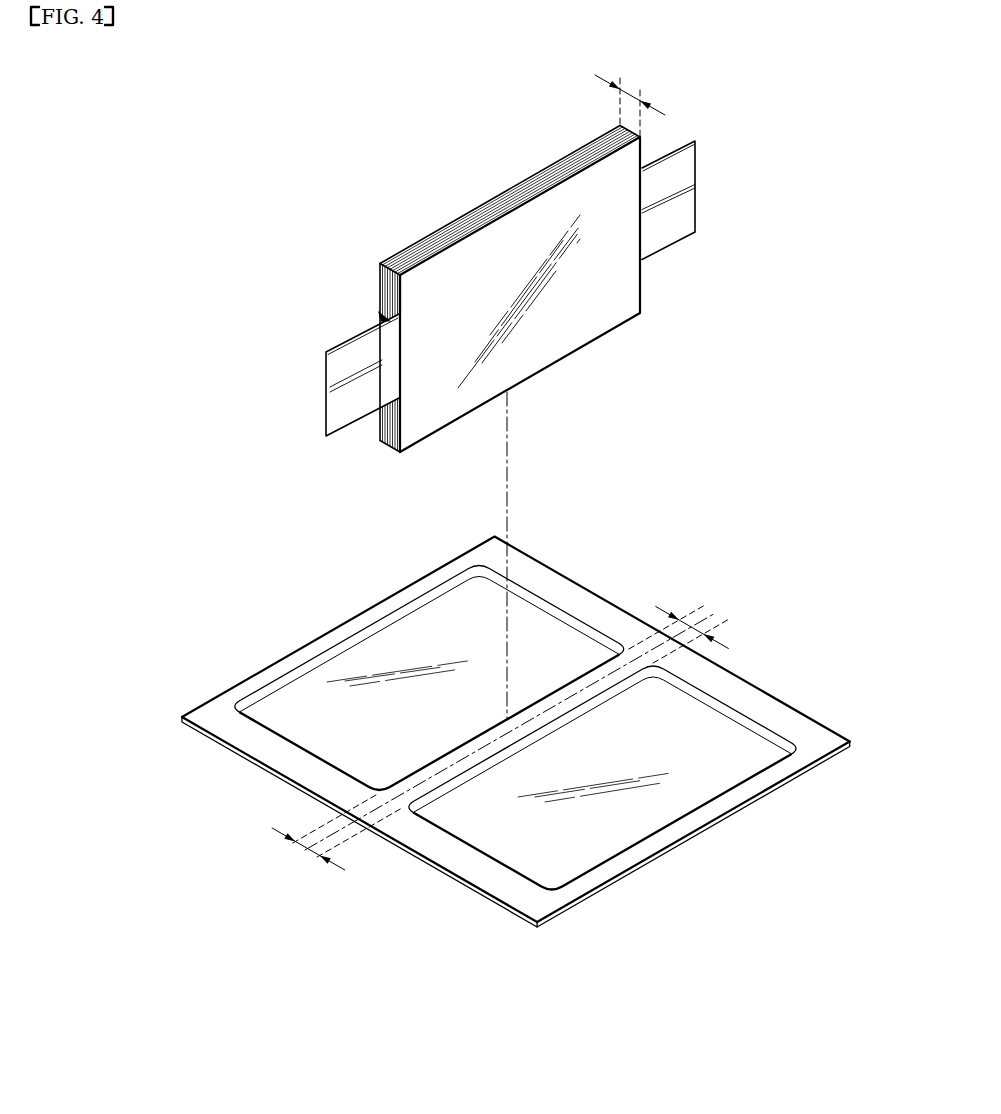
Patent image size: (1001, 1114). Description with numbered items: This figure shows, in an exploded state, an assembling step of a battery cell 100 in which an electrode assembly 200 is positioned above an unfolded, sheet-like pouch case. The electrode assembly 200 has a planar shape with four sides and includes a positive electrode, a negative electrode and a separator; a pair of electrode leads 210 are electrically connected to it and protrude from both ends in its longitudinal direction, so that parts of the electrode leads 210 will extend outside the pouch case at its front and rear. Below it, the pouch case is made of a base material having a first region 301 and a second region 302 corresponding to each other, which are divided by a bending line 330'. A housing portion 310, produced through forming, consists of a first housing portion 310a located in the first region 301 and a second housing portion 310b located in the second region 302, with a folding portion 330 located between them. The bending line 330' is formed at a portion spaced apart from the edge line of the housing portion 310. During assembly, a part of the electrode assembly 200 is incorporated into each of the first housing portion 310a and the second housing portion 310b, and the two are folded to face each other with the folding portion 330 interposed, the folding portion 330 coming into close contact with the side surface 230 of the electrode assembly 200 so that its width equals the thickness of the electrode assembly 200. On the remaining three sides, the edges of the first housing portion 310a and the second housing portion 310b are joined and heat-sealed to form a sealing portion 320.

The battery cell 100 is at (356, 74).
The electrode assembly 200 is at (433, 218).
The electrode lead 210 is at (688, 165).
The side surface of the electrode assembly 230 is at (620, 327).
The first region 301 is at (267, 747).
The second region 302 is at (498, 878).
The housing portion 310 is at (800, 878).
The first housing portion 310a is at (549, 650).
The second housing portion 310b is at (704, 739).
The sealing portion 320 is at (792, 722).
The folding portion 330 is at (516, 717).
The bending line 330' is at (341, 851).